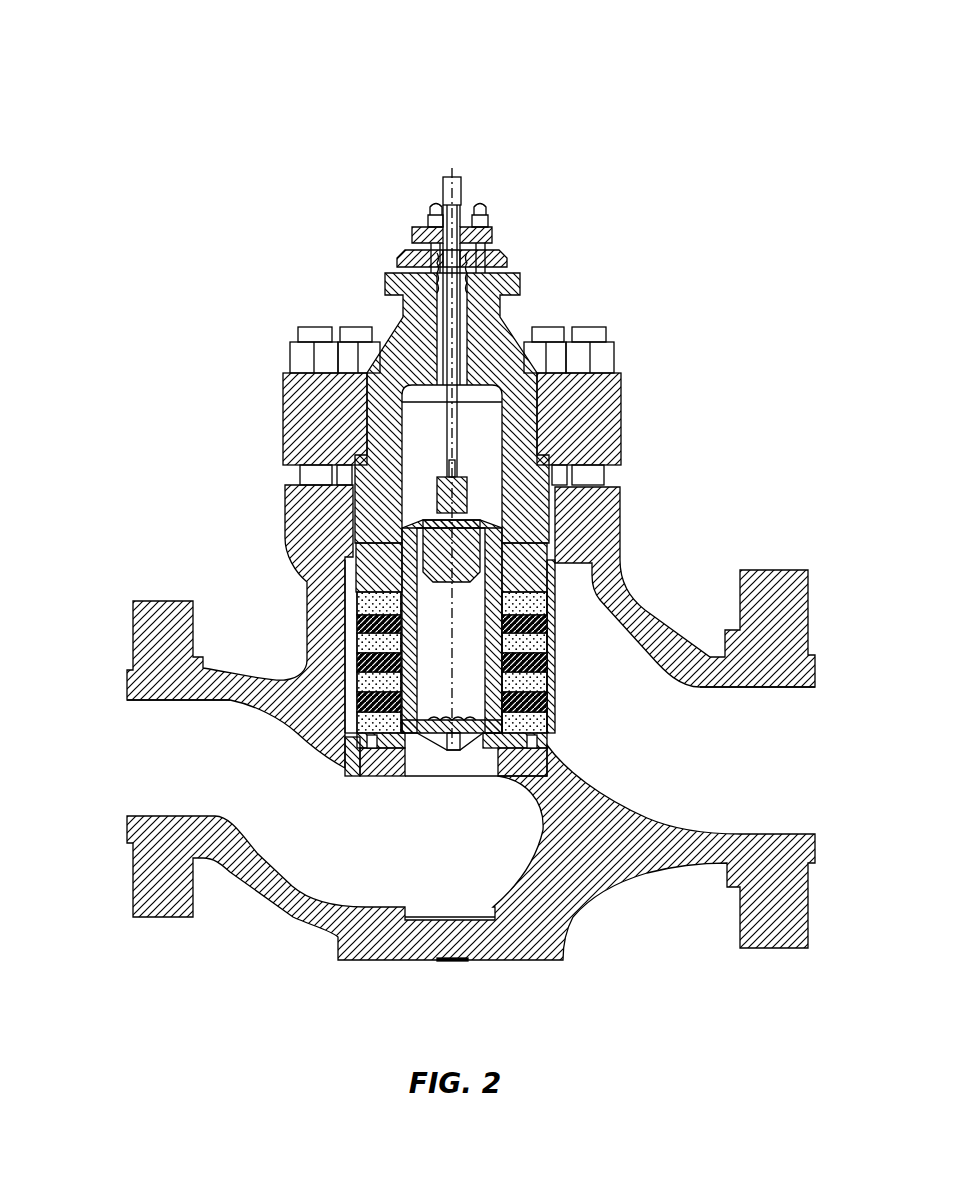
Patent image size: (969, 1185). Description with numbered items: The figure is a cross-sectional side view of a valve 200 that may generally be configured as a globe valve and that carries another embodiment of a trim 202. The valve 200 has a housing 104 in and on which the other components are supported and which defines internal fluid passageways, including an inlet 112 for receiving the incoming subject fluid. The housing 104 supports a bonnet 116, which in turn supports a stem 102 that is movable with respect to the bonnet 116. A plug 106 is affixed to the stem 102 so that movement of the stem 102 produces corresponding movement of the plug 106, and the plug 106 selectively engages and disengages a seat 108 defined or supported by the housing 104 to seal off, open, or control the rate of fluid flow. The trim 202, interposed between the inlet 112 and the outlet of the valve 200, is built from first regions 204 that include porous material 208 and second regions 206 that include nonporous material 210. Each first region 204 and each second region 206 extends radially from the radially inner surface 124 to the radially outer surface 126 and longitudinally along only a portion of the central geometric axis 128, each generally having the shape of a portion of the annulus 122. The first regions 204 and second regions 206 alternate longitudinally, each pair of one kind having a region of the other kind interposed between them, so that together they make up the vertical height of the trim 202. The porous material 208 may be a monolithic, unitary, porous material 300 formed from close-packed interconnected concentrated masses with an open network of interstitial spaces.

The valve 200 is at (636, 152).
The stem 102 is at (512, 358).
The housing 104 is at (318, 598).
The plug 106 is at (560, 512).
The seat 108 is at (405, 540).
The inlet 112 is at (167, 745).
The bonnet 116 is at (412, 325).
The annulus 122 is at (351, 689).
The radially inner surface 124 is at (403, 779).
The radially outer surface 126 is at (784, 740).
The central geometric axis 128 is at (458, 712).
The trim 202 is at (357, 597).
The first regions 204 is at (549, 600).
The second regions 206 is at (549, 625).
The porous material 208 is at (346, 660).
The nonporous material 210 is at (333, 732).
The monolithic, unitary, porous material 300 is at (363, 777).